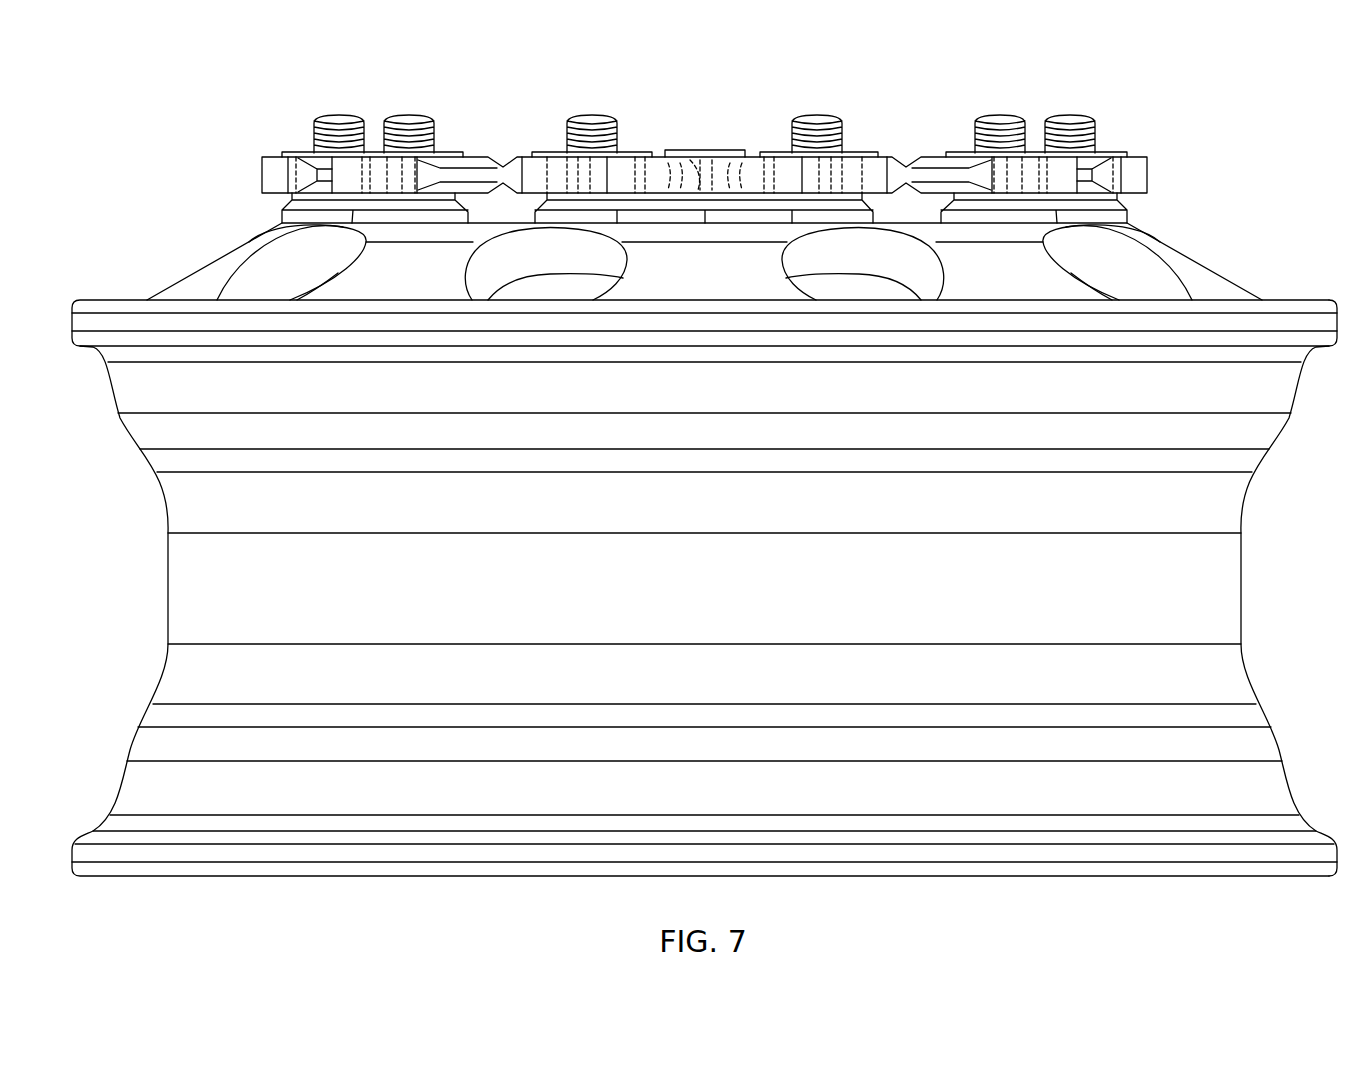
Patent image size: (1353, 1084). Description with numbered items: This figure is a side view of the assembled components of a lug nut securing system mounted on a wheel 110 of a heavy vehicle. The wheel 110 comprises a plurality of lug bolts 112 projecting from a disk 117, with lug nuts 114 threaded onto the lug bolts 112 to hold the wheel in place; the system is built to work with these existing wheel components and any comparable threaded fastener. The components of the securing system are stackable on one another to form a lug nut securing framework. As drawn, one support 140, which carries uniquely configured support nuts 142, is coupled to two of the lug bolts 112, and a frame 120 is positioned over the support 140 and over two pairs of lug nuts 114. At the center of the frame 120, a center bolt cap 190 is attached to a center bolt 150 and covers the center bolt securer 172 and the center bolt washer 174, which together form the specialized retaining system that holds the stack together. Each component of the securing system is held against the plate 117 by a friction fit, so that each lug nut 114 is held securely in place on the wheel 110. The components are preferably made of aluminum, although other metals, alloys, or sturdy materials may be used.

The wheel 110 is at (687, 600).
The lug bolt 112 is at (352, 113).
The lug nut 114 is at (284, 164).
The disk 117 is at (686, 249).
The frame 120 is at (1150, 168).
The support 140 is at (877, 217).
The support nut 142 is at (541, 166).
The center bolt 150 is at (700, 148).
The center bolt securer 172 is at (664, 162).
The center bolt washer 174 is at (753, 156).
The center bolt cap 190 is at (692, 150).